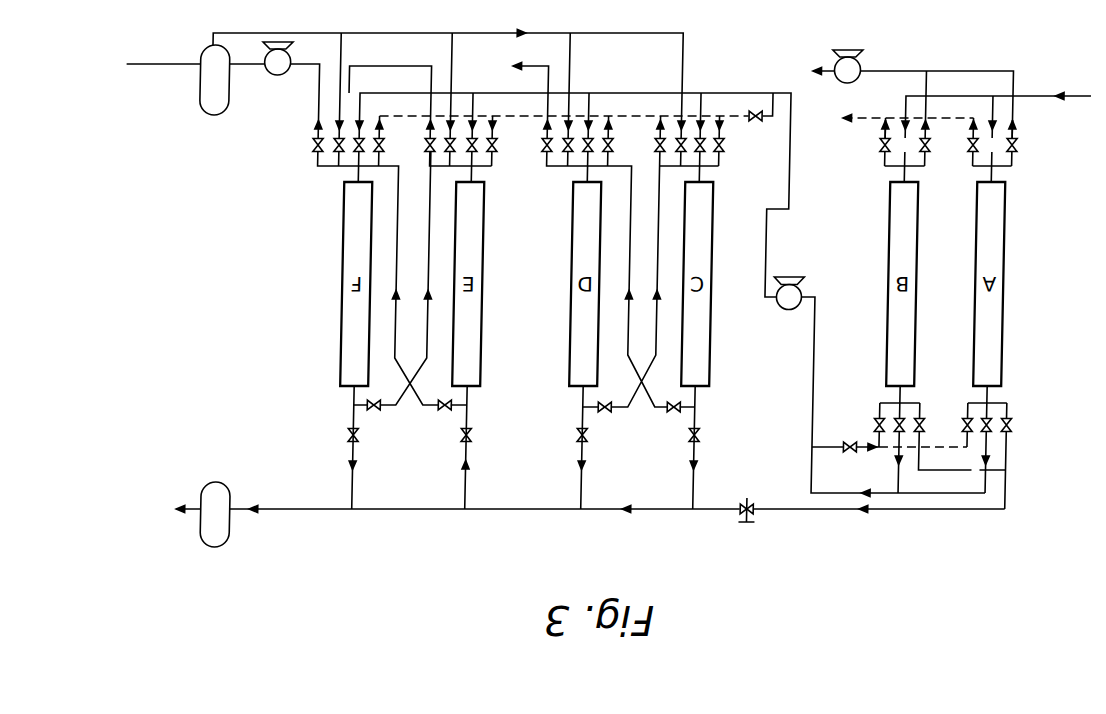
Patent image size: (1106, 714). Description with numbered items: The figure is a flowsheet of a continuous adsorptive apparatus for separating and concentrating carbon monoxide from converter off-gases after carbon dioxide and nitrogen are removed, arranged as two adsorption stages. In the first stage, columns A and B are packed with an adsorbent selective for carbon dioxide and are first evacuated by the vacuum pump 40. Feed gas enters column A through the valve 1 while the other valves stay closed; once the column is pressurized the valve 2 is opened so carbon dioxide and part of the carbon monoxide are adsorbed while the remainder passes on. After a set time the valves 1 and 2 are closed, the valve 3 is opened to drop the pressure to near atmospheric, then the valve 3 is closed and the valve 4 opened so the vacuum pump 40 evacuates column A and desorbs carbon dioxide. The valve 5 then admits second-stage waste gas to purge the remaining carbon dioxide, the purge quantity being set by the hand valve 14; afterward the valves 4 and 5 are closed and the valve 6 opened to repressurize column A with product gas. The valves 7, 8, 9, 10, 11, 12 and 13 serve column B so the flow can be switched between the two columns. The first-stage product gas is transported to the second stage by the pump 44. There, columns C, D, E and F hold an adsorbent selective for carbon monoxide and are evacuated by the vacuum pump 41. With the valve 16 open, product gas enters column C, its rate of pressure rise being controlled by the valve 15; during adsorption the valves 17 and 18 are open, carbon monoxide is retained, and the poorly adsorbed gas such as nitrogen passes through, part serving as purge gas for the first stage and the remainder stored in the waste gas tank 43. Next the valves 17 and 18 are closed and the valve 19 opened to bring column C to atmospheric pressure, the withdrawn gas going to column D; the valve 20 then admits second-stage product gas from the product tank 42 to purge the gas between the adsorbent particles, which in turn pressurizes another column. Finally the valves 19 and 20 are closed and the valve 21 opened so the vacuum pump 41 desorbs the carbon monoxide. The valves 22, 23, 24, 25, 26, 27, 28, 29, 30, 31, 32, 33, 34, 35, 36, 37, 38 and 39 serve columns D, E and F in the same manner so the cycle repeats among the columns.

The valve 1 is at (1014, 130).
The valve 2 is at (995, 420).
The valve 3 is at (970, 150).
The valve 4 is at (1017, 148).
The valve 5 is at (1017, 428).
The valve 6 is at (968, 428).
The valve 7 is at (885, 130).
The valve 8 is at (903, 420).
The valve 9 is at (882, 150).
The valve 10 is at (930, 148).
The valve 11 is at (928, 420).
The valve 12 is at (880, 425).
The valve 13 is at (856, 453).
The hand valve 14 is at (754, 498).
The valve 15 is at (760, 122).
The valve 16 is at (724, 146).
The valve 17 is at (695, 437).
The valve 18 is at (706, 148).
The valve 19 is at (679, 412).
The valve 20 is at (686, 148).
The valve 21 is at (655, 146).
The valve 22 is at (613, 146).
The valve 23 is at (583, 435).
The valve 24 is at (584, 150).
The valve 25 is at (610, 412).
The valve 26 is at (563, 146).
The valve 27 is at (552, 148).
The valve 28 is at (497, 146).
The valve 29 is at (467, 438).
The valve 30 is at (476, 150).
The valve 31 is at (450, 410).
The valve 32 is at (453, 138).
The valve 33 is at (426, 140).
The valve 34 is at (384, 146).
The valve 35 is at (354, 435).
The valve 36 is at (365, 143).
The valve 37 is at (379, 410).
The valve 38 is at (334, 148).
The valve 39 is at (313, 142).
The vacuum pump 40 is at (845, 83).
The vacuum pump 41 is at (276, 75).
The product tank 42 is at (213, 115).
The waste gas tank 43 is at (220, 482).
The pump 44 is at (783, 307).